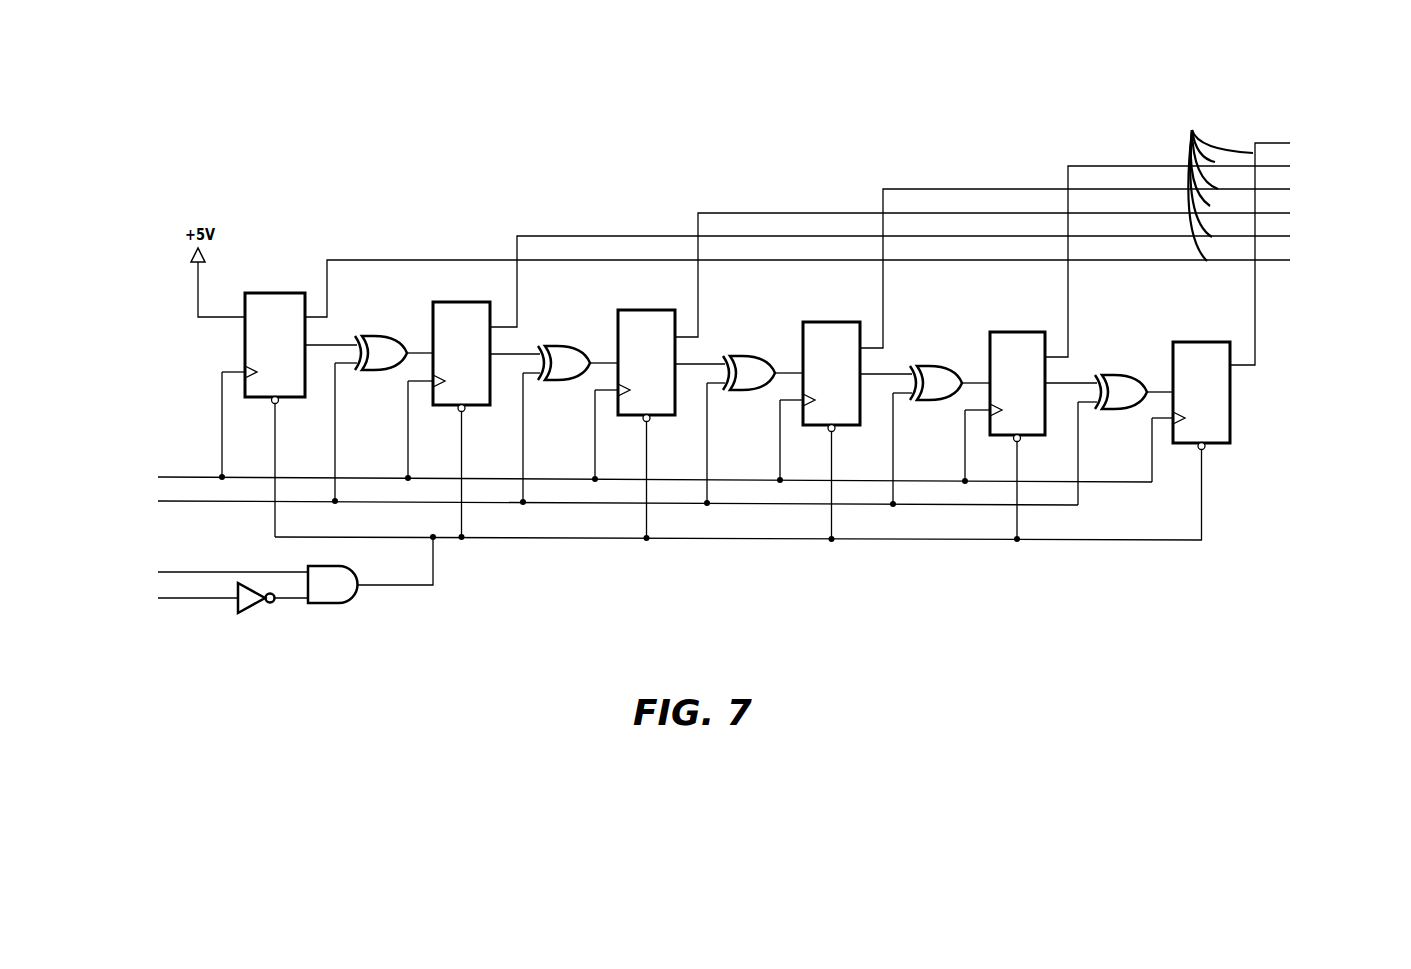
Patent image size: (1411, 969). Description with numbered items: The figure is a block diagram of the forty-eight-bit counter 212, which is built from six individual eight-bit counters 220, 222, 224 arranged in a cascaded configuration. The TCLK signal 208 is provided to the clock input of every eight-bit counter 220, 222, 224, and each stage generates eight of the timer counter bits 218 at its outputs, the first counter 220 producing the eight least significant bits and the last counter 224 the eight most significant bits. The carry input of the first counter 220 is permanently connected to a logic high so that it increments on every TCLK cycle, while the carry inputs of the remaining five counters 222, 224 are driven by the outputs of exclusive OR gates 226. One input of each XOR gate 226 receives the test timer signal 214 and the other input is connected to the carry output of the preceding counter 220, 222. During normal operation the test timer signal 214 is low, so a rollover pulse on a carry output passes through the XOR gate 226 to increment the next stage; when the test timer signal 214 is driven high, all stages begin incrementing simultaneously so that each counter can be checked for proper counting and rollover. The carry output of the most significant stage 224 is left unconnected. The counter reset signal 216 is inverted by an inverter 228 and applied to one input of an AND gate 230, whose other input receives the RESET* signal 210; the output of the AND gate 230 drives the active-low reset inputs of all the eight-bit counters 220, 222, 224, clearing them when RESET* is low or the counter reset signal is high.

The TCLK signal 208 is at (179, 473).
The RESET* signal 210 is at (200, 571).
The counter 212 is at (673, 141).
The test timer signal 214 is at (185, 502).
The counter reset signal 216 is at (183, 600).
The timer counter bits 218 is at (1288, 189).
The first 8-bit counter 220 is at (273, 293).
The 8-bit counter 222 is at (459, 301).
The last 8-bit counter 224 is at (1202, 342).
The exclusive OR logic gate 226 is at (368, 336).
The inverter 228 is at (250, 610).
The AND gate 230 is at (335, 604).